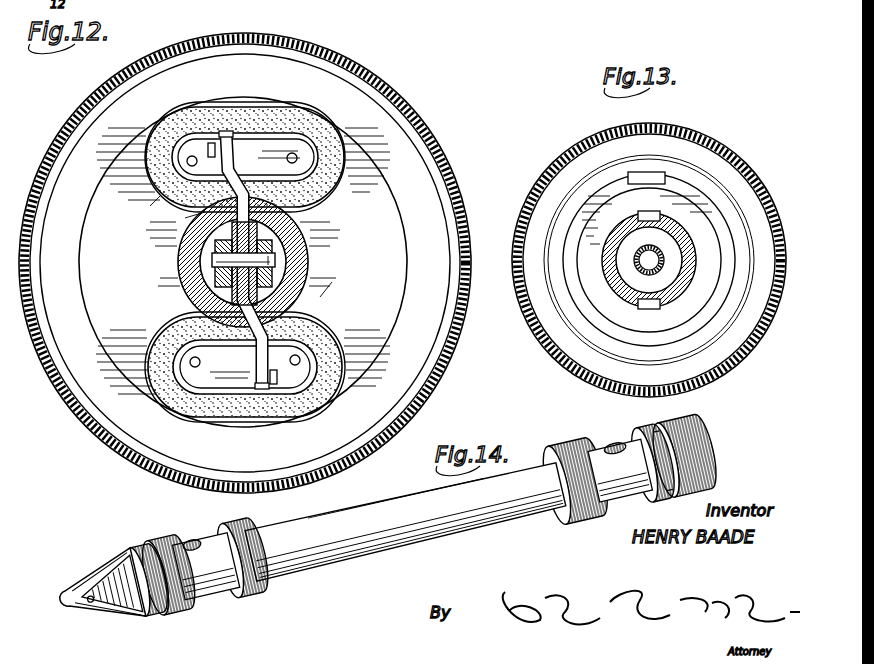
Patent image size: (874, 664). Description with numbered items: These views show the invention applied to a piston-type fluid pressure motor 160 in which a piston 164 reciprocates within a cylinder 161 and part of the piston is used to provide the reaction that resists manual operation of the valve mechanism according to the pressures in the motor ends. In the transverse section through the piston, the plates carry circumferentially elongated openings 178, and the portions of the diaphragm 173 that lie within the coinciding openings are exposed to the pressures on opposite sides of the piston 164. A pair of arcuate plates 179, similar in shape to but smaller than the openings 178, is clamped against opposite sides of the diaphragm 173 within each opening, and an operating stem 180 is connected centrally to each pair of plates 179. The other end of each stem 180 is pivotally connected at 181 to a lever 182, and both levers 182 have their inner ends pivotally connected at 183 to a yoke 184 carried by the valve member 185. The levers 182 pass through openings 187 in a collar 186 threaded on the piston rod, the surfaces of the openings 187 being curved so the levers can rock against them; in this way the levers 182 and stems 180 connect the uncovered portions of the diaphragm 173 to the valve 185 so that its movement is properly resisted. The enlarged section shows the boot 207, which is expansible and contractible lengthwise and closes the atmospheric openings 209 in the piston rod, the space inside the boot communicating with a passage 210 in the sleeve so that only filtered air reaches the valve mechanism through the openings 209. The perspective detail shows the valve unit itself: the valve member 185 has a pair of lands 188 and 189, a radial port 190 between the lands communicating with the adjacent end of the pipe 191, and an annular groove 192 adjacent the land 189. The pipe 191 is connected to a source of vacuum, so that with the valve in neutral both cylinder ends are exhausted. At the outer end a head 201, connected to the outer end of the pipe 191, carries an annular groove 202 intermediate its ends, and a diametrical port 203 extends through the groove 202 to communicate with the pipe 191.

In FIG. 12, the fluid pressure motor 160 is at (411, 105).
In FIG. 12, the cylinder 161 is at (448, 156).
In FIG. 12, the piston 164 is at (448, 209).
In FIG. 12, the diaphragm 173 is at (230, 251).
In FIG. 12, the circumferentially elongated openings 178 is at (318, 172).
In FIG. 12, the arcuate plates 179 is at (300, 192).
In FIG. 12, the operating stem 180 is at (238, 158).
In FIG. 12, the pivotal connection 181 is at (214, 134).
In FIG. 12, the lever 182 is at (190, 241).
In FIG. 12, the pivotal connection 183 is at (276, 262).
In FIG. 12, the yoke 184 is at (232, 276).
In FIG. 12, the collar 186 is at (290, 270).
In FIG. 12, the openings 187 is at (185, 218).
In FIG. 13, the boot 207 is at (720, 148).
In FIG. 13, the atmospheric openings 209 is at (646, 221).
In FIG. 13, the passage 210 is at (660, 172).
In FIG. 13, the pipe 191 is at (661, 268).
In FIG. 14, the pipe 191 is at (388, 510).
In FIG. 14, the valve member 185 is at (292, 524).
In FIG. 14, the land 188 is at (243, 533).
In FIG. 14, the land 189 is at (160, 552).
In FIG. 14, the radial port 190 is at (195, 552).
In FIG. 14, the annular groove 192 is at (162, 622).
In FIG. 14, the head 201 is at (702, 436).
In FIG. 14, the annular groove 202 is at (668, 433).
In FIG. 14, the diametrical port 203 is at (640, 443).